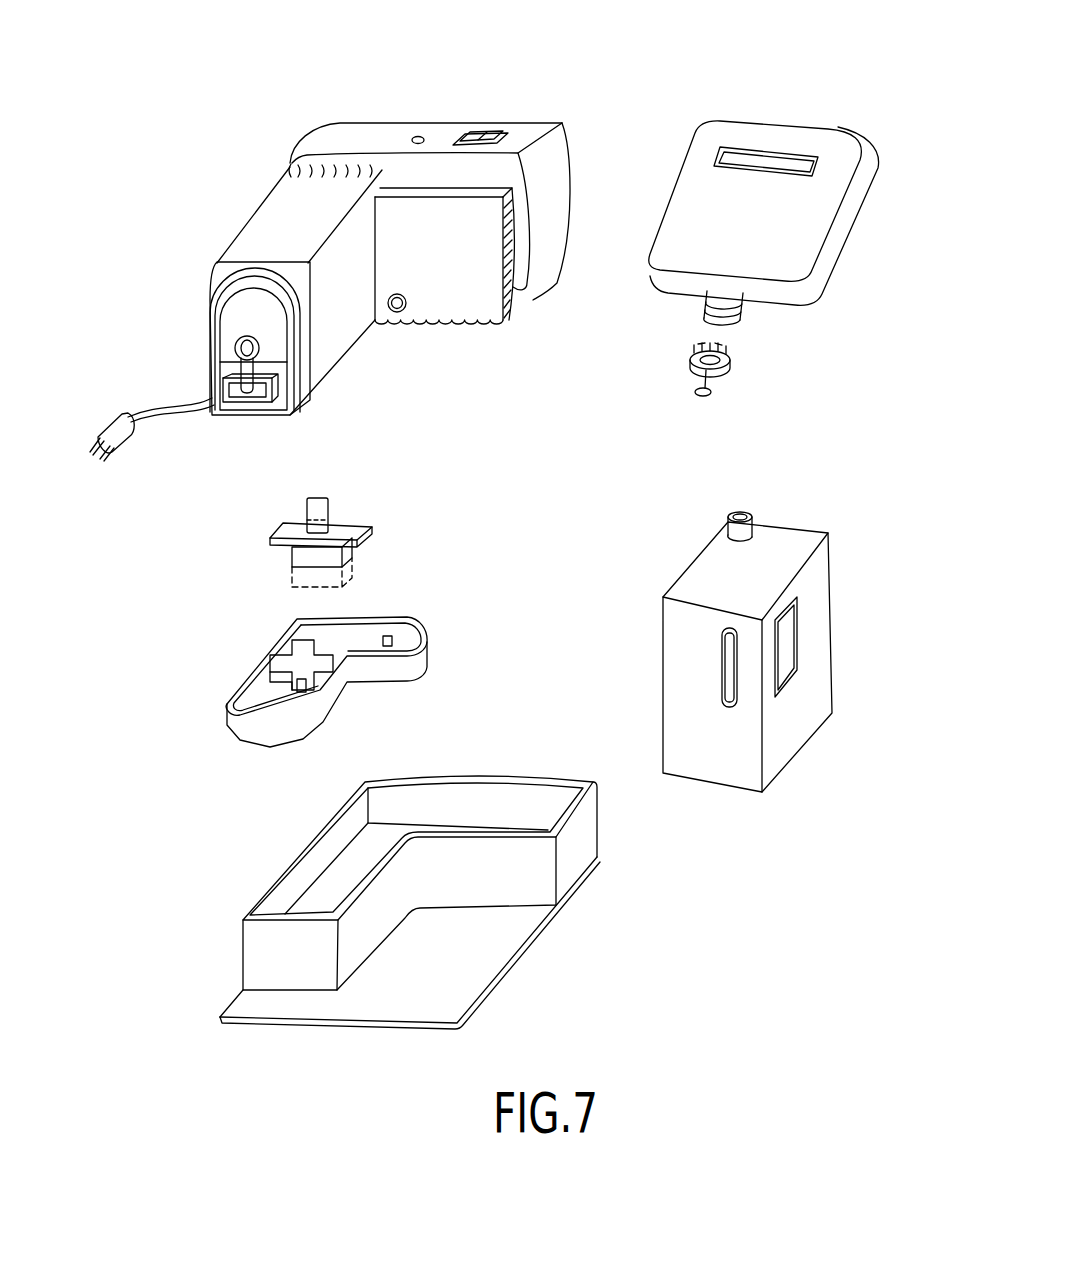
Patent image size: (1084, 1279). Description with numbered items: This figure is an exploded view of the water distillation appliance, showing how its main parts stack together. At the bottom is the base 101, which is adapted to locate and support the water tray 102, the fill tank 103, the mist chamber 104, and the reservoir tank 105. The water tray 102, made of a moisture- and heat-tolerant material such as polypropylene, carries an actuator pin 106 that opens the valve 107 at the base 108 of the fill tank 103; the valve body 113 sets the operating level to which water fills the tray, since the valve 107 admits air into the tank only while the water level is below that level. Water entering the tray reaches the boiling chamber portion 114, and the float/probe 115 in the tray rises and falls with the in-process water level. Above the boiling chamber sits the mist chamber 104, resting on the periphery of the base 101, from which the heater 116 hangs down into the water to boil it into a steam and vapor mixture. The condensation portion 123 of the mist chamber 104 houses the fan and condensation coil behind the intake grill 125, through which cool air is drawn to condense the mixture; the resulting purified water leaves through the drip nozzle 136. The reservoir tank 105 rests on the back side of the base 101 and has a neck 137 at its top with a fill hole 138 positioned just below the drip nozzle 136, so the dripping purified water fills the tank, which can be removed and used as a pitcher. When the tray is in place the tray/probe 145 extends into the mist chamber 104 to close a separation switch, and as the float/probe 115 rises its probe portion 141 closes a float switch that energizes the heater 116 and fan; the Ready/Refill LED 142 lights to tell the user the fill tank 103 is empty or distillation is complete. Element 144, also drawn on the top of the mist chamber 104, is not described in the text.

The base 101 is at (527, 960).
The water tray 102 is at (286, 666).
The fill tank 103 is at (747, 223).
The mist chamber 104 is at (330, 250).
The reservoir tank 105 is at (812, 607).
The actuator pin 106 is at (402, 626).
The valve 107 is at (696, 393).
The base of the fill tank 108 is at (770, 298).
The valve body 113 is at (732, 372).
The boiling chamber portion 114 is at (280, 703).
The float/probe 115 is at (337, 492).
The heater 116 is at (238, 336).
The condensation portion 123 is at (333, 136).
The intake grill 125 is at (311, 159).
The drip nozzle 136 is at (402, 308).
The neck 137 is at (752, 513).
The fill hole 138 is at (740, 508).
The probe portion 141 is at (338, 510).
The Ready/Refill LED 142 is at (419, 130).
The switch 144 is at (503, 122).
The tray/probe 145 is at (297, 635).